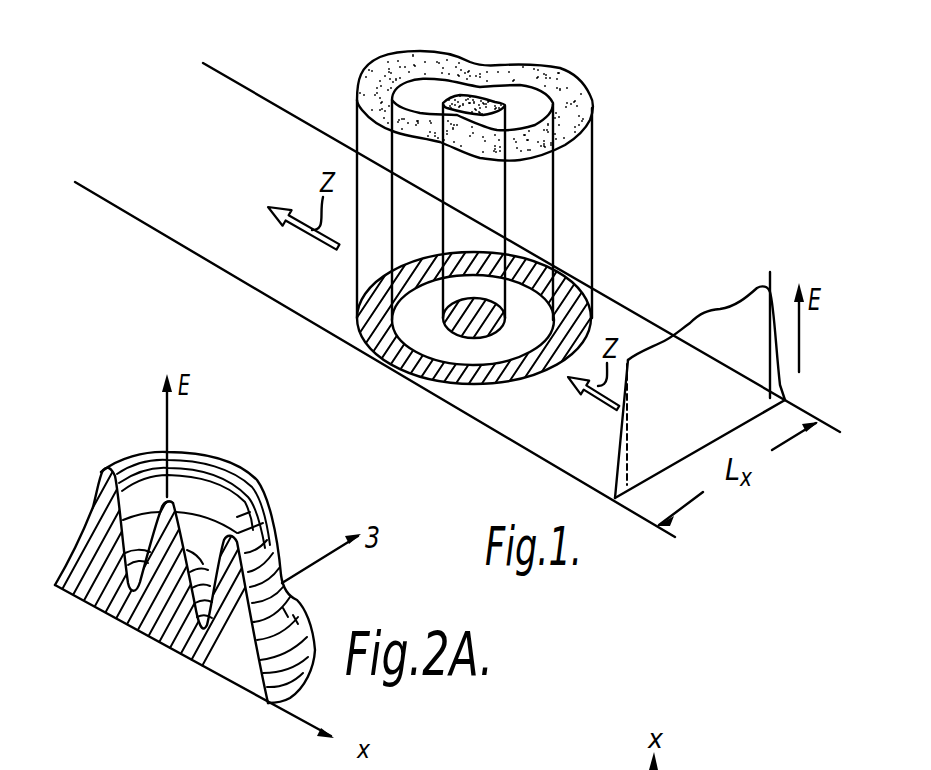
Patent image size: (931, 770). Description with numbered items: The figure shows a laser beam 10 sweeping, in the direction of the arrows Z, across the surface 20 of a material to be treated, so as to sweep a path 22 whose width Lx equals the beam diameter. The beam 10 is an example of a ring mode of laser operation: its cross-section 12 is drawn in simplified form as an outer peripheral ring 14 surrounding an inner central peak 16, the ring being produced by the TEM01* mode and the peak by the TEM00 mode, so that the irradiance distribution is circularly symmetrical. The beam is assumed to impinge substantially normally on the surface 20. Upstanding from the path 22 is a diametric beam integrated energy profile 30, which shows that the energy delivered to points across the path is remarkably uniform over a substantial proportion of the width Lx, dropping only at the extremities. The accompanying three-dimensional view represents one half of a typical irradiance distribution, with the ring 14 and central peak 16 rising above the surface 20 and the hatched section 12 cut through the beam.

In FIG. 1, the laser beam 10 is at (579, 70).
In FIG. 1, the cross-section 12 is at (427, 350).
In FIG. 2A, the cross-section 12 is at (92, 586).
In FIG. 1, the outer peripheral ring 14 is at (455, 378).
In FIG. 2A, the outer peripheral ring 14 is at (254, 485).
In FIG. 1, the inner central peak 16 is at (476, 340).
In FIG. 2A, the inner central peak 16 is at (167, 505).
In FIG. 1, the surface 20 is at (318, 376).
In FIG. 1, the path 22 is at (612, 300).
In FIG. 1, the diametric beam integrated energy profile 30 is at (617, 460).